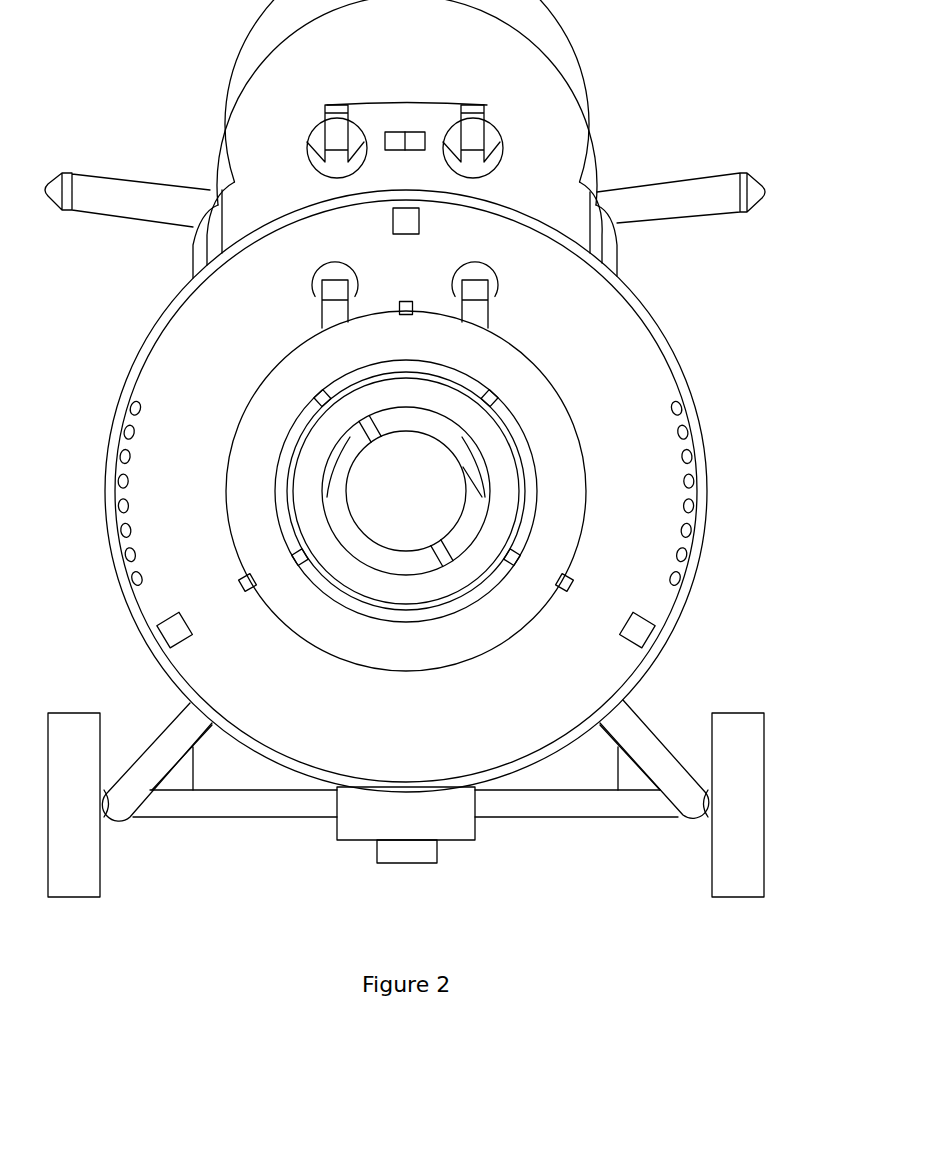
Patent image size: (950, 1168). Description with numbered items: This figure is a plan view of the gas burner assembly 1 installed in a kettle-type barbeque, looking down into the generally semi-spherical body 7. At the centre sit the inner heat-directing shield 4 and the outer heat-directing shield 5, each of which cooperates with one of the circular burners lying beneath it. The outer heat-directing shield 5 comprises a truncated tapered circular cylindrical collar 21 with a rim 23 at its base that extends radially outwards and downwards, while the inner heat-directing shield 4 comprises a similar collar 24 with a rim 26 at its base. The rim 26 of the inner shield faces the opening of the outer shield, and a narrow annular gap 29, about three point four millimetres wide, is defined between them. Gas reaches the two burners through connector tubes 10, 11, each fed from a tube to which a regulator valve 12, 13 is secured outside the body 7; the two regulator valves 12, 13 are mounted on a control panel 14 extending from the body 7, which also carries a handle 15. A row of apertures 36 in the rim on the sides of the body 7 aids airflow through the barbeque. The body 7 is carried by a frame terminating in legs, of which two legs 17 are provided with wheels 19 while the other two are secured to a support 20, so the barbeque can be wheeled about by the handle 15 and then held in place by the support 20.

The gas burner assembly 1 is at (634, 354).
The inner heat-directing shield 4 is at (337, 566).
The outer heat-directing shield 5 is at (252, 461).
The barbeque body 7 is at (708, 525).
The connector tube 10 is at (335, 312).
The connector tube 11 is at (482, 313).
The regulator valve 12 is at (318, 140).
The regulator valve 13 is at (497, 135).
The control panel 14 is at (243, 192).
The handle 15 is at (468, 62).
The legs 17 is at (660, 757).
The wheels 19 is at (738, 764).
The support 20 is at (675, 193).
The collar 21 is at (500, 586).
The rim 23 is at (567, 528).
The collar 24 is at (300, 512).
The rim 26 is at (293, 440).
The annular gap 29 is at (399, 634).
The apertures 36 is at (695, 432).